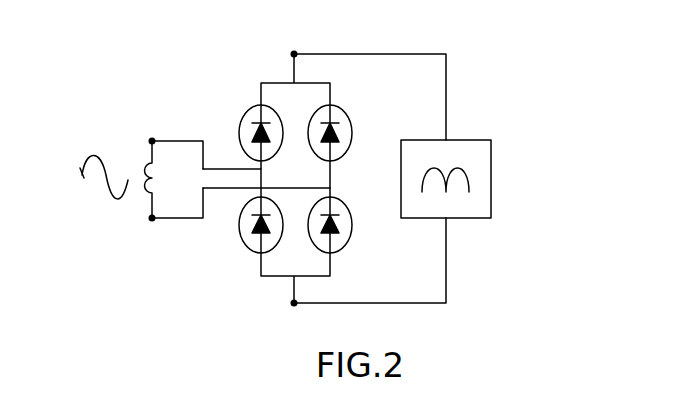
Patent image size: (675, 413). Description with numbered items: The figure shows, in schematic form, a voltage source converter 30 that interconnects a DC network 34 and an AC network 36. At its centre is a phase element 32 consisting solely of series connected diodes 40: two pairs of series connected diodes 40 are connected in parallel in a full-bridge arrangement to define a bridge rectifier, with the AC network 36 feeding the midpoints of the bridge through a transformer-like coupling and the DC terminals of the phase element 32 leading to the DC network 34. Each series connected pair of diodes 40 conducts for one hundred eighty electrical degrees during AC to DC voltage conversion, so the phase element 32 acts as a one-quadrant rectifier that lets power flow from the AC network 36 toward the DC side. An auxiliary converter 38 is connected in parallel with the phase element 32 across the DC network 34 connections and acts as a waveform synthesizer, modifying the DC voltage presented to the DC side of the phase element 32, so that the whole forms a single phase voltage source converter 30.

The voltage source converter 30 is at (500, 71).
The phase element 32 is at (303, 168).
The DC network 34 is at (447, 54).
The AC network 36 is at (82, 172).
The auxiliary converter 38 is at (495, 164).
The series connected diodes 40 is at (255, 138).